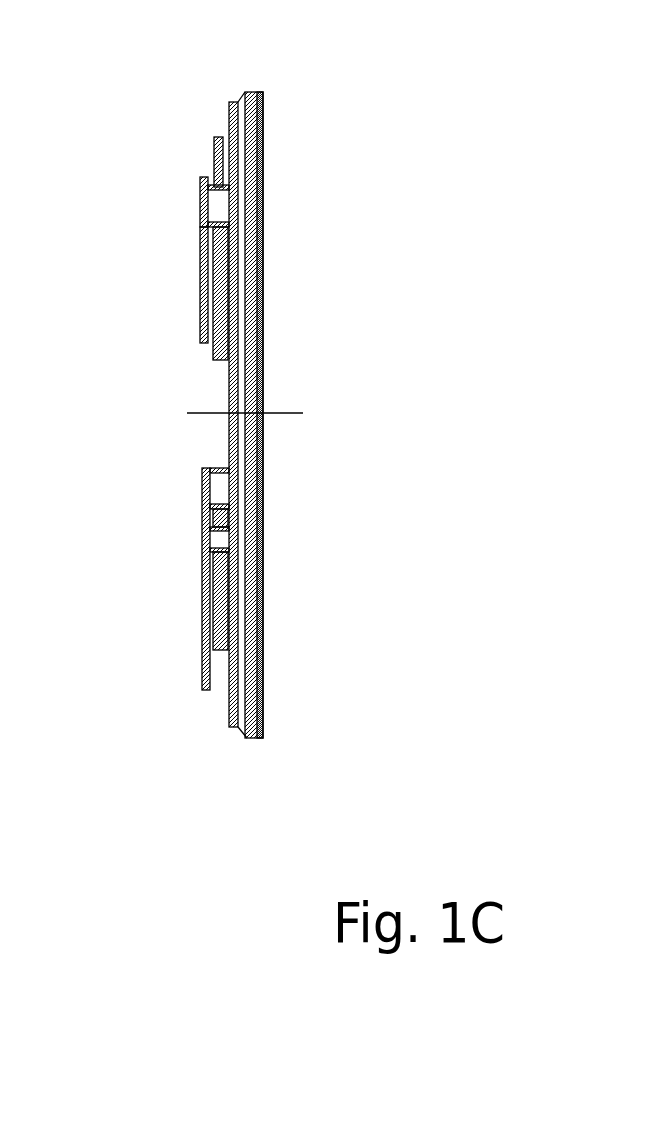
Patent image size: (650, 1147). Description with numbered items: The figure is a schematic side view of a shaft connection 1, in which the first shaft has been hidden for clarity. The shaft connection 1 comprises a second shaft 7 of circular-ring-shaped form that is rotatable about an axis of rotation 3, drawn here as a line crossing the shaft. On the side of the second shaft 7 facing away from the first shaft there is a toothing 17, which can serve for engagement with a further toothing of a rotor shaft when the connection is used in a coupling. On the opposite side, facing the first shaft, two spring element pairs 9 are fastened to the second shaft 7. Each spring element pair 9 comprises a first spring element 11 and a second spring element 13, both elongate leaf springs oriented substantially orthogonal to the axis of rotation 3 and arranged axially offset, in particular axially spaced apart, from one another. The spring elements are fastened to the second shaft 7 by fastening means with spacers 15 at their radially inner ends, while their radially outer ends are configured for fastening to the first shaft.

The shaft connection 1 is at (100, 79).
The axis of rotation 3 is at (190, 413).
The second shaft 7 is at (239, 96).
The spring element pair 9 is at (150, 252).
The first spring element 11 is at (217, 137).
The second spring element 13 is at (199, 304).
The spacer 15 is at (203, 177).
The toothing 17 is at (264, 155).